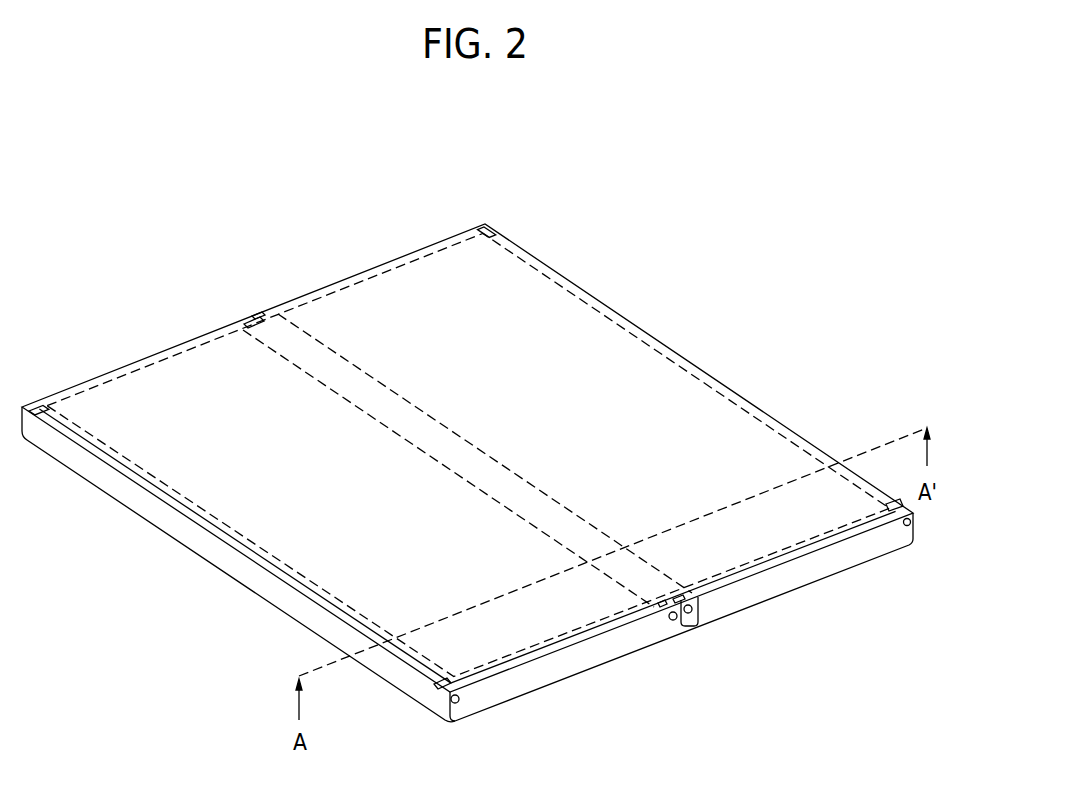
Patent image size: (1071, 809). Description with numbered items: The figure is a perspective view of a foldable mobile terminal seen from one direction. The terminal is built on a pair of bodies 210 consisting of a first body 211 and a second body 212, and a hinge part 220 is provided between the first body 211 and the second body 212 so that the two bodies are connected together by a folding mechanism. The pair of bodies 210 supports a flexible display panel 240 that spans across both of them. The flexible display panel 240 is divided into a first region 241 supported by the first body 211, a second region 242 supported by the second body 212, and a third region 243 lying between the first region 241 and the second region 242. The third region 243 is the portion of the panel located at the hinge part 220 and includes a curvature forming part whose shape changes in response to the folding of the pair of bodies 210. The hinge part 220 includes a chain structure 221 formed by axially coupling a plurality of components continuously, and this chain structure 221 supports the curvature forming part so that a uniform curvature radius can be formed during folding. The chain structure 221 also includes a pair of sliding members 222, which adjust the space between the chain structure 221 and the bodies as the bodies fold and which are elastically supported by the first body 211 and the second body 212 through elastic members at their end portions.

The pair of bodies 210 is at (277, 240).
The first body 211 is at (212, 336).
The second body 212 is at (320, 291).
The hinge part 220 is at (702, 659).
The chain structure 221 is at (681, 626).
The sliding members 222 is at (690, 614).
The flexible display panel 240 is at (313, 595).
The first region 241 is at (238, 503).
The second region 242 is at (712, 408).
The third region 243 is at (505, 470).